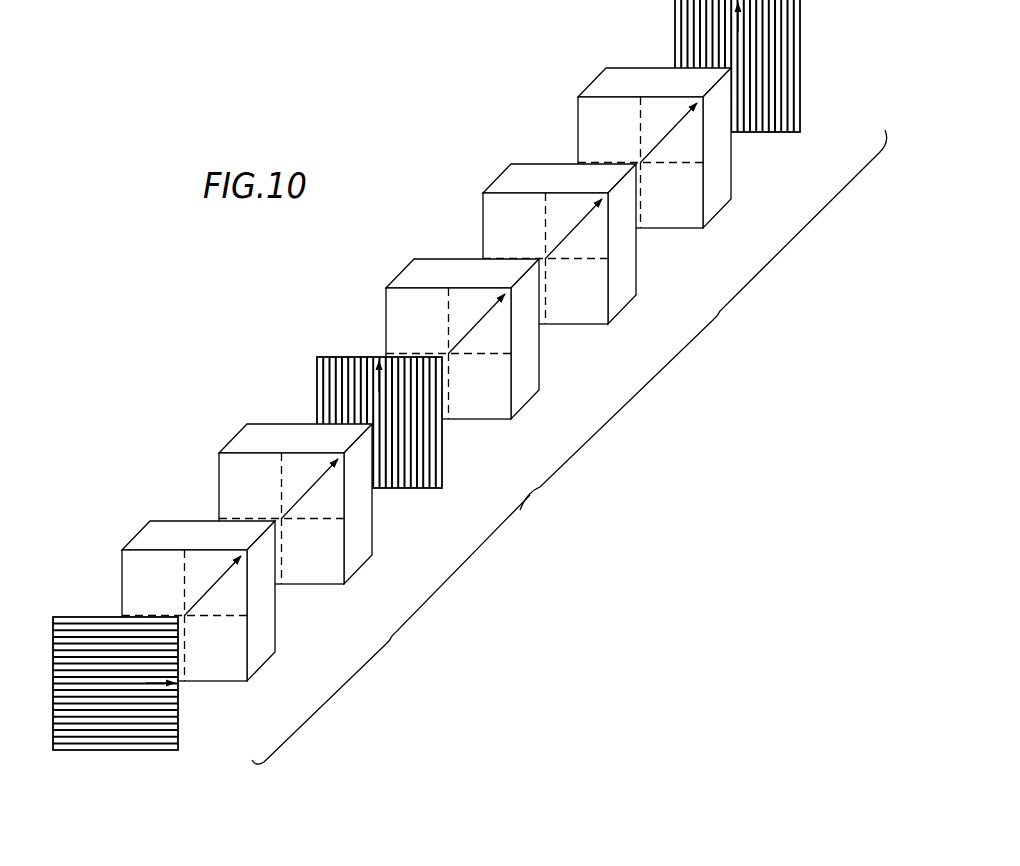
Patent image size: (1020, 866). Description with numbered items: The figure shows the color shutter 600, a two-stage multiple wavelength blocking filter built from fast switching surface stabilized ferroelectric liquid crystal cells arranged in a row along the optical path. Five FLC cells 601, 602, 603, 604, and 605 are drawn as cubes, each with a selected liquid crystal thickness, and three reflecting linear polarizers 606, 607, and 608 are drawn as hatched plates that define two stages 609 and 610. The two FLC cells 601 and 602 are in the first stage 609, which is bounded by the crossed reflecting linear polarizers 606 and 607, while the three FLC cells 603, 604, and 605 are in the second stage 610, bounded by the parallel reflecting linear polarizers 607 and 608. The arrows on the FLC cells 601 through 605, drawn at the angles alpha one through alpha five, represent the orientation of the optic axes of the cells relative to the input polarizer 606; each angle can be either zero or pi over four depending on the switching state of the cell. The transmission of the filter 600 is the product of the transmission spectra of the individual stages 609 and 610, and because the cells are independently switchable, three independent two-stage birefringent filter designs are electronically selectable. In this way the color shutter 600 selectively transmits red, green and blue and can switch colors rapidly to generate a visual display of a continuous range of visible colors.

The color shutter 600 is at (412, 226).
The first FLC cell 601 is at (276, 617).
The second FLC cell 602 is at (373, 532).
The third FLC cell 603 is at (539, 361).
The fourth FLC cell 604 is at (634, 260).
The fifth FLC cell 605 is at (733, 168).
The input reflecting linear polarizer 606 is at (179, 717).
The second reflecting linear polarizer 607 is at (443, 450).
The third reflecting linear polarizer 608 is at (800, 75).
The first stage 609 is at (385, 645).
The second stage 610 is at (713, 320).